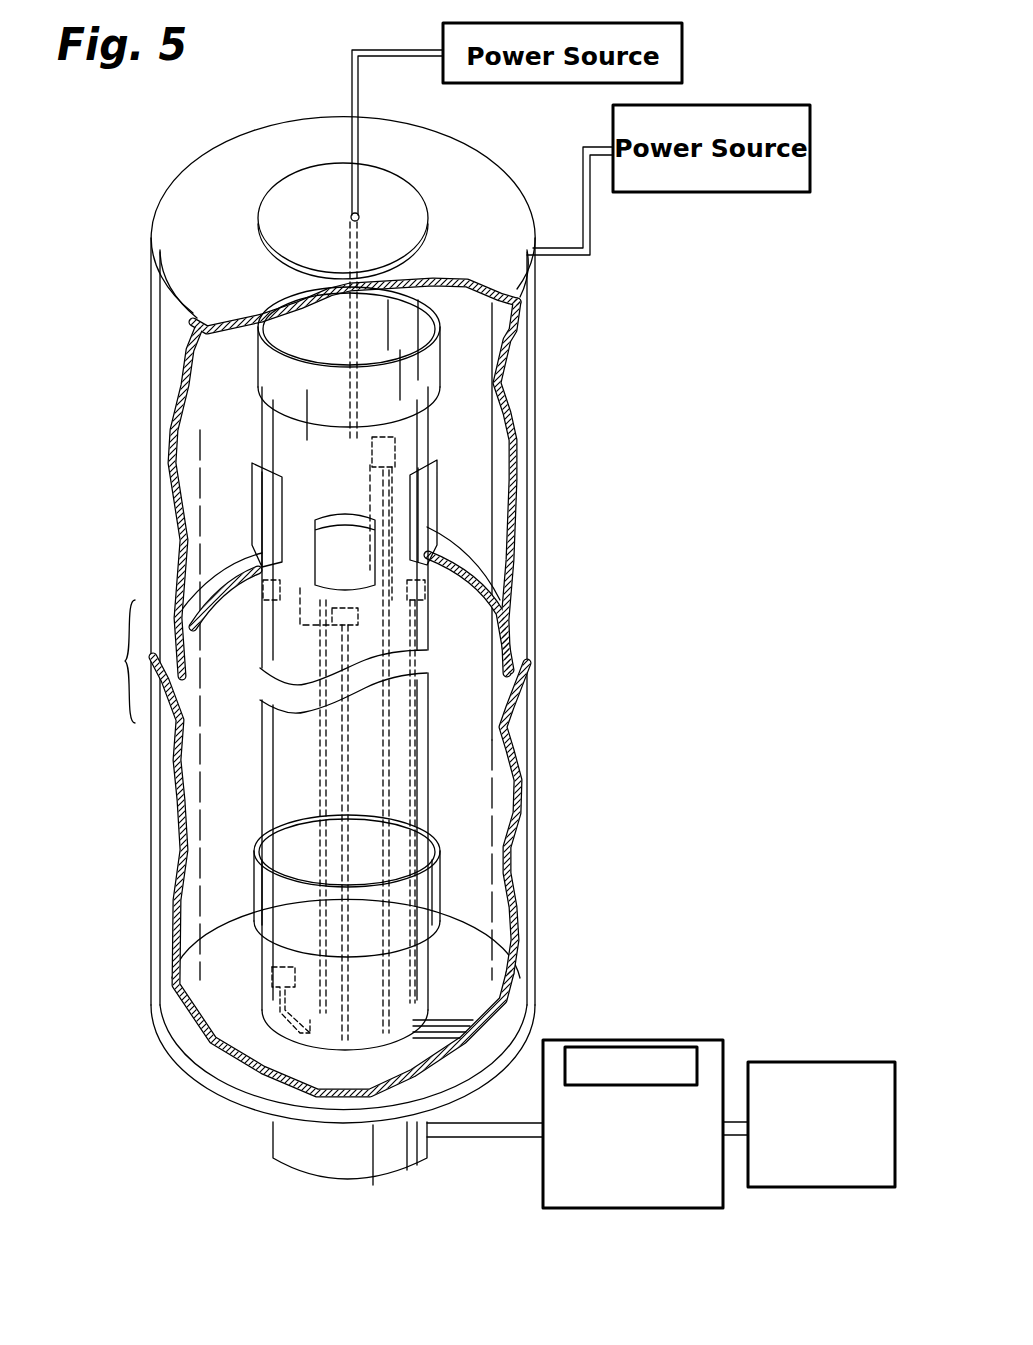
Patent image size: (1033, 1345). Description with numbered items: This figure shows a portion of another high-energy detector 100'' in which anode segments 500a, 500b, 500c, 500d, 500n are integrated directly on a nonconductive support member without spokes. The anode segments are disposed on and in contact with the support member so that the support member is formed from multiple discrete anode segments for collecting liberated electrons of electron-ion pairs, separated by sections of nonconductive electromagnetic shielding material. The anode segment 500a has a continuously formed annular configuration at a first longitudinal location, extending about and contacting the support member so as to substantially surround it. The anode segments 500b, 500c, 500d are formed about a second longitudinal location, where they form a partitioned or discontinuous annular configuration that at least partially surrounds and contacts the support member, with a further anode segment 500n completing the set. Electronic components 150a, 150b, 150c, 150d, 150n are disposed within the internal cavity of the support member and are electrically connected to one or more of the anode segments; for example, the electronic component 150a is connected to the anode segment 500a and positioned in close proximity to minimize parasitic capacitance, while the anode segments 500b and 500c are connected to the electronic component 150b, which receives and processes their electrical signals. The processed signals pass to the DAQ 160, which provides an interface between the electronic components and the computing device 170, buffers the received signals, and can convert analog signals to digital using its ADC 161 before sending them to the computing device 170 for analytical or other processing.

The high-energy detector 100'' is at (292, 651).
The anode segment 500a is at (446, 330).
The anode segment 500b is at (249, 488).
The anode segment 500c is at (334, 515).
The anode segment 500d is at (443, 496).
The anode segment 500n is at (446, 839).
The electronic component 150a is at (397, 447).
The electronic component 150b is at (263, 593).
The electronic component 150c is at (330, 618).
The electronic component 150d is at (425, 592).
The electronic component 150n is at (276, 966).
The DAQ 160 is at (655, 1040).
The ADC 161 is at (578, 1040).
The computing device 170 is at (846, 1060).